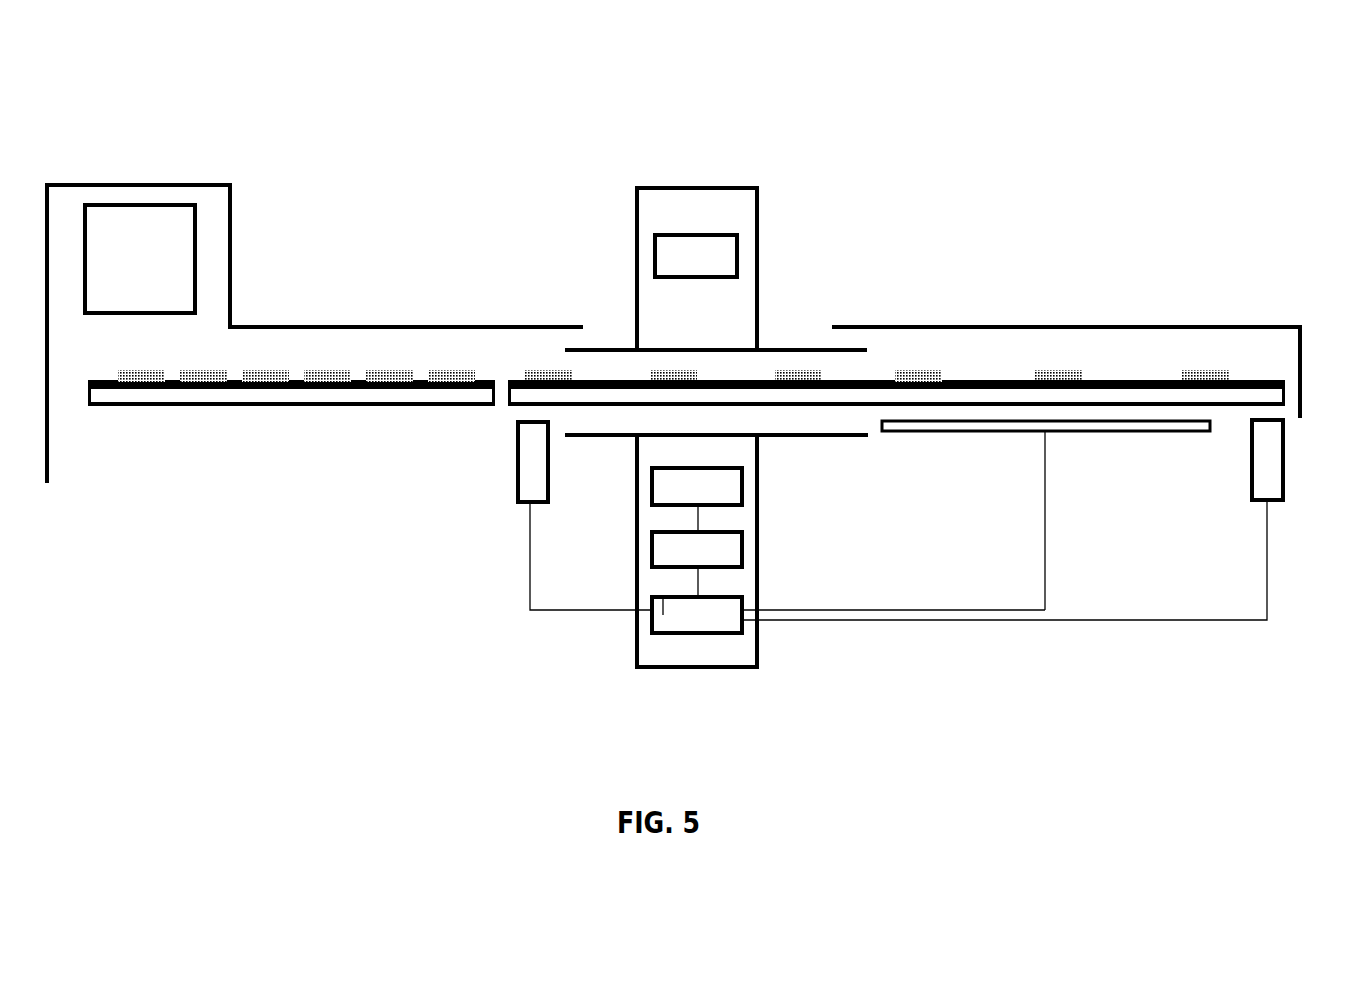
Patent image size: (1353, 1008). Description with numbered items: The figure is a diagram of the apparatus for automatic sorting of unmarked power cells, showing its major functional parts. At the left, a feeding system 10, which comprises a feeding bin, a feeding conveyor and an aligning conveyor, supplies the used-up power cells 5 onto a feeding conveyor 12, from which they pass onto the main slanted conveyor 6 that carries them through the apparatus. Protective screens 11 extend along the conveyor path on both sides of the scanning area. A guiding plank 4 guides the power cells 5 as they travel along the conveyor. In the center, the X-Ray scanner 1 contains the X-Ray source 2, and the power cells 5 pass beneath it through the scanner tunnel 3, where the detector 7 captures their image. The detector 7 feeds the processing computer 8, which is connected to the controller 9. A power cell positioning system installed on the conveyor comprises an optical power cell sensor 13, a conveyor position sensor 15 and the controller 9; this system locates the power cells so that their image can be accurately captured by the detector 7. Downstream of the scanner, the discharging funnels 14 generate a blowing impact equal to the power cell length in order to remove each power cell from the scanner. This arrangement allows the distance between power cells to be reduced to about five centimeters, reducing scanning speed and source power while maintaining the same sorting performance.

The X-Ray scanner 1 is at (700, 188).
The X-Ray source 2 is at (737, 252).
The scanner tunnel 3 is at (780, 350).
The guiding plank 4 is at (490, 378).
The used-up power cells 5 is at (267, 390).
The main slanted conveyor 6 is at (877, 378).
The detector 7 is at (742, 487).
The processing computer 8 is at (742, 548).
The controller 9 is at (700, 633).
The feeding system 10 is at (140, 205).
The protective screens 11 is at (322, 327).
The feeding conveyor 12 is at (187, 406).
The optical power cell sensor 13 is at (518, 492).
The discharging funnels 14 is at (1085, 432).
The conveyor position sensor 15 is at (1283, 467).